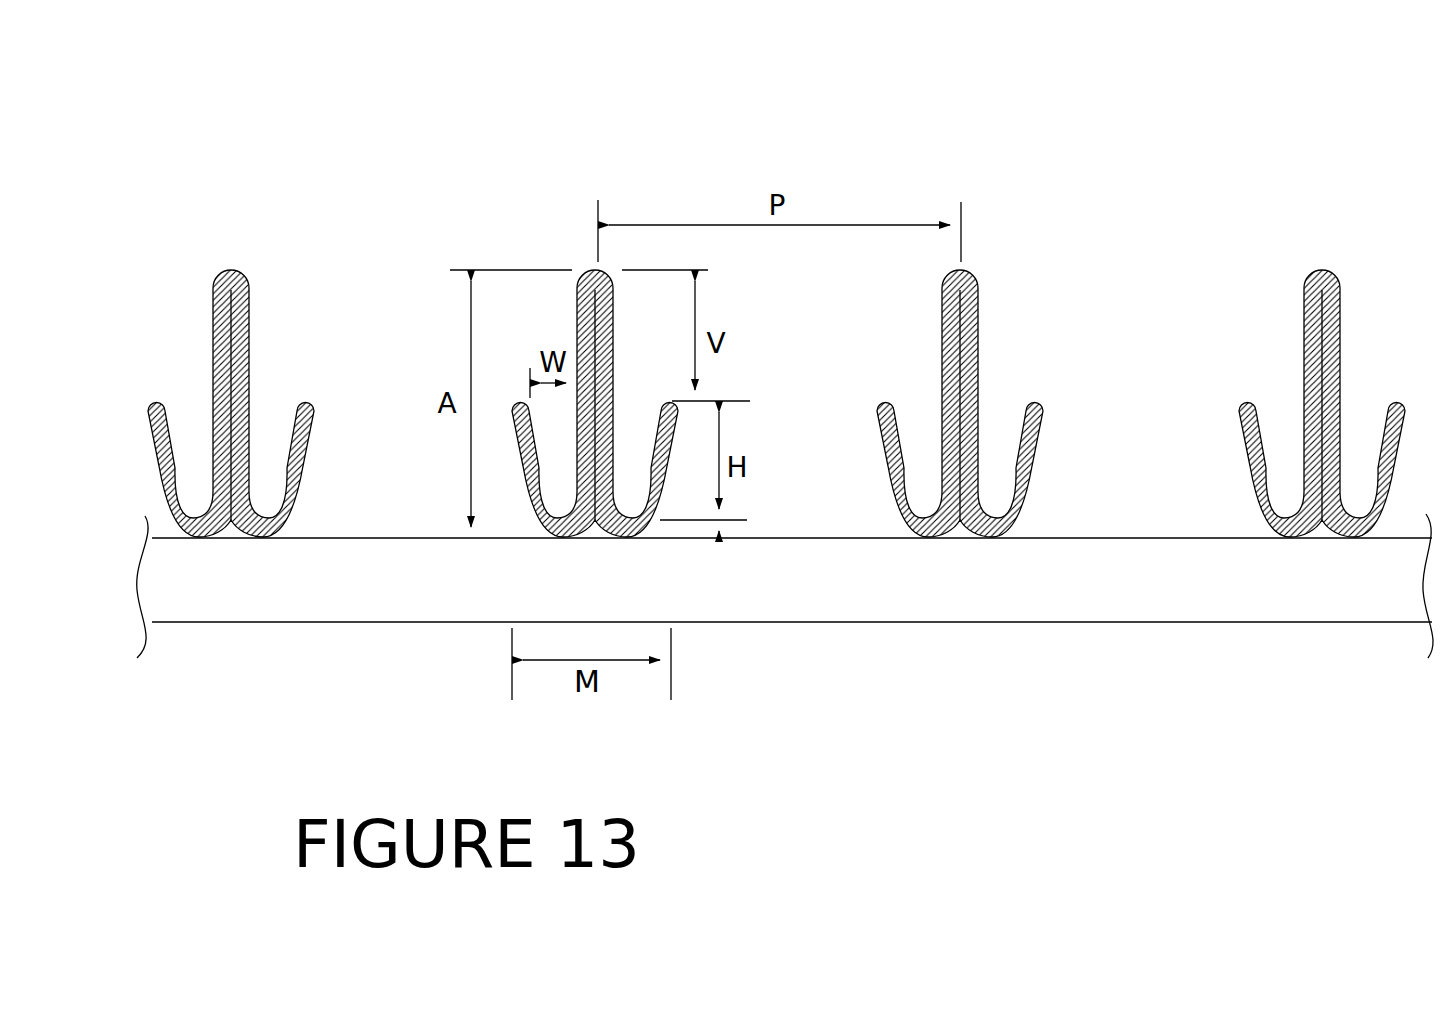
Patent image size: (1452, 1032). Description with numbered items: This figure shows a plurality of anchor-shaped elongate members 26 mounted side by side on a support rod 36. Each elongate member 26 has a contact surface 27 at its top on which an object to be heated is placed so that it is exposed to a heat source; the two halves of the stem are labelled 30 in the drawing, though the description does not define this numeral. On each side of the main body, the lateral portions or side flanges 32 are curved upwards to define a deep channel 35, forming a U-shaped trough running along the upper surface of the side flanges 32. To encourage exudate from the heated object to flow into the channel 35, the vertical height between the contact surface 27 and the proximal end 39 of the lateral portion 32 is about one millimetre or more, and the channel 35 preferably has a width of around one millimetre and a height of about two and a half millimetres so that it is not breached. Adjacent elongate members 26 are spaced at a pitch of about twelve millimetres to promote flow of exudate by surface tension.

The elongate member 26 is at (749, 309).
The contact surface 27 is at (230, 374).
The stem 30 is at (230, 374).
The lateral portion 32 is at (148, 425).
The channel 35 is at (230, 403).
The proximal end 39 is at (668, 403).
The support rod 36 is at (1084, 615).